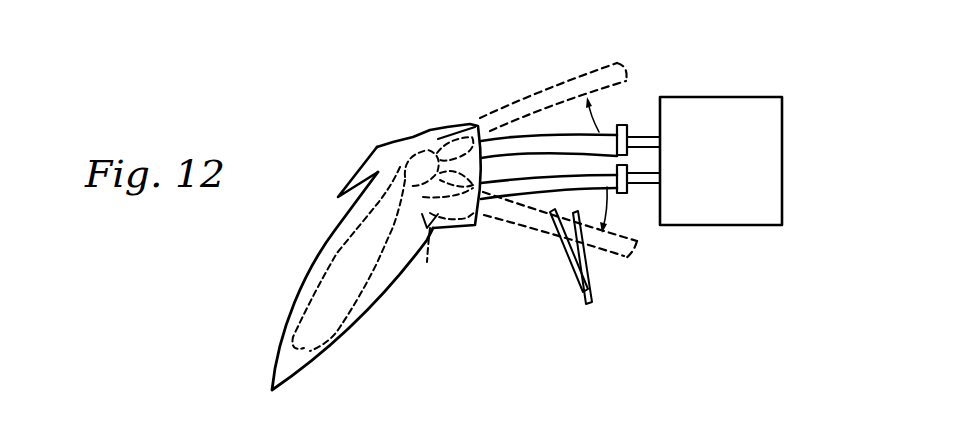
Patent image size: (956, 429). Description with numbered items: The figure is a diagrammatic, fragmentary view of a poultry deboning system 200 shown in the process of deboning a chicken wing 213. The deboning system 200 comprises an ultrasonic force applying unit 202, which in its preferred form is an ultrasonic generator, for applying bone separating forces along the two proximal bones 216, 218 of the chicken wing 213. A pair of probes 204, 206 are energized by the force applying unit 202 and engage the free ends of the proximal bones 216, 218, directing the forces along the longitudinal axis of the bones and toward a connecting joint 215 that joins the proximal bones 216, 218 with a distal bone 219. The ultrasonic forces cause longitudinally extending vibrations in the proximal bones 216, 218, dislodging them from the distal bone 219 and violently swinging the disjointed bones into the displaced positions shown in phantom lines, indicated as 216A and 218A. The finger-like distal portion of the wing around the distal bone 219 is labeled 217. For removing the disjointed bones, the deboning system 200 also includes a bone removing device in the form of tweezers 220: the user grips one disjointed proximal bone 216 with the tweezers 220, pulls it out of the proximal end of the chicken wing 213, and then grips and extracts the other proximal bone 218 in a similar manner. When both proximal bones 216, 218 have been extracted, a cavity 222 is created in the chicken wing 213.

The poultry deboning system 200 is at (266, 327).
The ultrasonic force applying unit 202 is at (744, 105).
The probe 204 is at (622, 193).
The probe 206 is at (622, 125).
The chicken wing 213 is at (422, 117).
The connecting joint 215 is at (395, 162).
The proximal bone 216 is at (523, 137).
The upper arm member in displaced position 216A is at (593, 68).
The finger portion 217 is at (347, 318).
The proximal bone 218 is at (543, 199).
The lower arm member in displaced position 218A is at (617, 260).
The distal bone 219 is at (340, 246).
The tweezers 220 is at (570, 273).
The cavity 222 is at (427, 260).